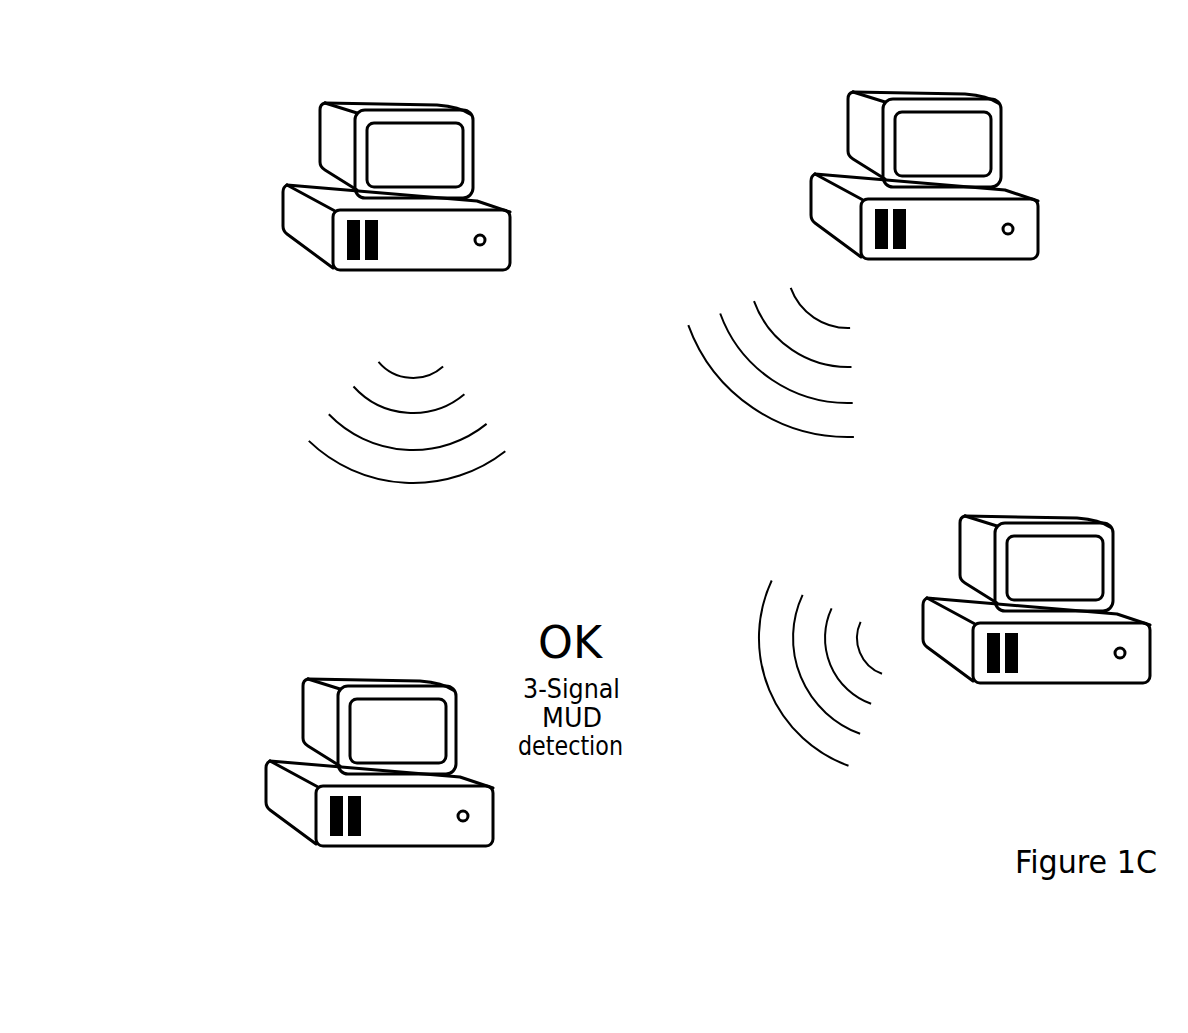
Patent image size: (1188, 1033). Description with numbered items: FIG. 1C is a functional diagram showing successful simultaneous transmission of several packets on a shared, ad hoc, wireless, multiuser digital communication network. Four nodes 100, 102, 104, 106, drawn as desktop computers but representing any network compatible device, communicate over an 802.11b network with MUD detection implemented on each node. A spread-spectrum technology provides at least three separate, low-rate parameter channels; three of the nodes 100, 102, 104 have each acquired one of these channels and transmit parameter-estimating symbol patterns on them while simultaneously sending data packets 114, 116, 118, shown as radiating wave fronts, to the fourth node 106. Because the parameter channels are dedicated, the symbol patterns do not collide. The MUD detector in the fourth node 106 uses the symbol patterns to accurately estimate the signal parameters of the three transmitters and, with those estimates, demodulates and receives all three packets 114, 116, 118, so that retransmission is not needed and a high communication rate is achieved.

The node 100 is at (317, 120).
The node 102 is at (845, 105).
The node 104 is at (958, 537).
The node 106 is at (302, 700).
The data packet 114 is at (497, 380).
The data packet 116 is at (743, 283).
The data packet 118 is at (808, 567).